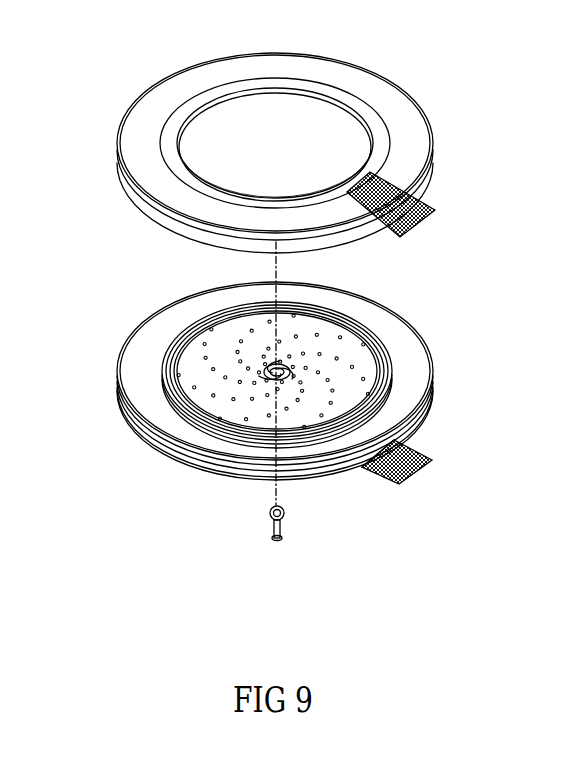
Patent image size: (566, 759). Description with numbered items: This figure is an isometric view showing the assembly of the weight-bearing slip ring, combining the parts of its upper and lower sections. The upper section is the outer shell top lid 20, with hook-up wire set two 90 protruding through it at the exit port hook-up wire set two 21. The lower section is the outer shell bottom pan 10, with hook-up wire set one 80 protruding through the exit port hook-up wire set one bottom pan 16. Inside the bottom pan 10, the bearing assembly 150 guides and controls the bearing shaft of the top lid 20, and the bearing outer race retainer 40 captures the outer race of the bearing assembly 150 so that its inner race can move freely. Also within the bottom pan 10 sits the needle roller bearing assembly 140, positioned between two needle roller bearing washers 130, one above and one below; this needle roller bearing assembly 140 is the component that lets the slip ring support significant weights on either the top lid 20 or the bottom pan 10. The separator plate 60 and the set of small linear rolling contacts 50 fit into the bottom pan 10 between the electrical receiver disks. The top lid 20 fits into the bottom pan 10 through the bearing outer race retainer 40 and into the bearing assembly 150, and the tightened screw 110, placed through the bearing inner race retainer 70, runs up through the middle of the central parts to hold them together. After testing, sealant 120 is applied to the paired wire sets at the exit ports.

The bottom pan 10 is at (437, 408).
The exit port hook-up wire set one bottom pan 16 is at (337, 463).
The top lid 20 is at (422, 122).
The exit port hook-up wire set two 21 is at (372, 167).
The bearing outer race retainer 40 is at (262, 375).
The small linear rolling contacts 50 is at (202, 335).
The separator plate 60 is at (162, 358).
The bearing inner race retainer 70 is at (269, 512).
The hook-up wire set one 80 is at (430, 453).
The hook-up wire set two 90 is at (428, 200).
The screw 110 is at (284, 527).
The sealant 120 is at (305, 200).
The needle roller bearing washers 130 is at (413, 338).
The needle roller bearing assembly 140 is at (357, 323).
The bearing assembly 150 is at (262, 372).